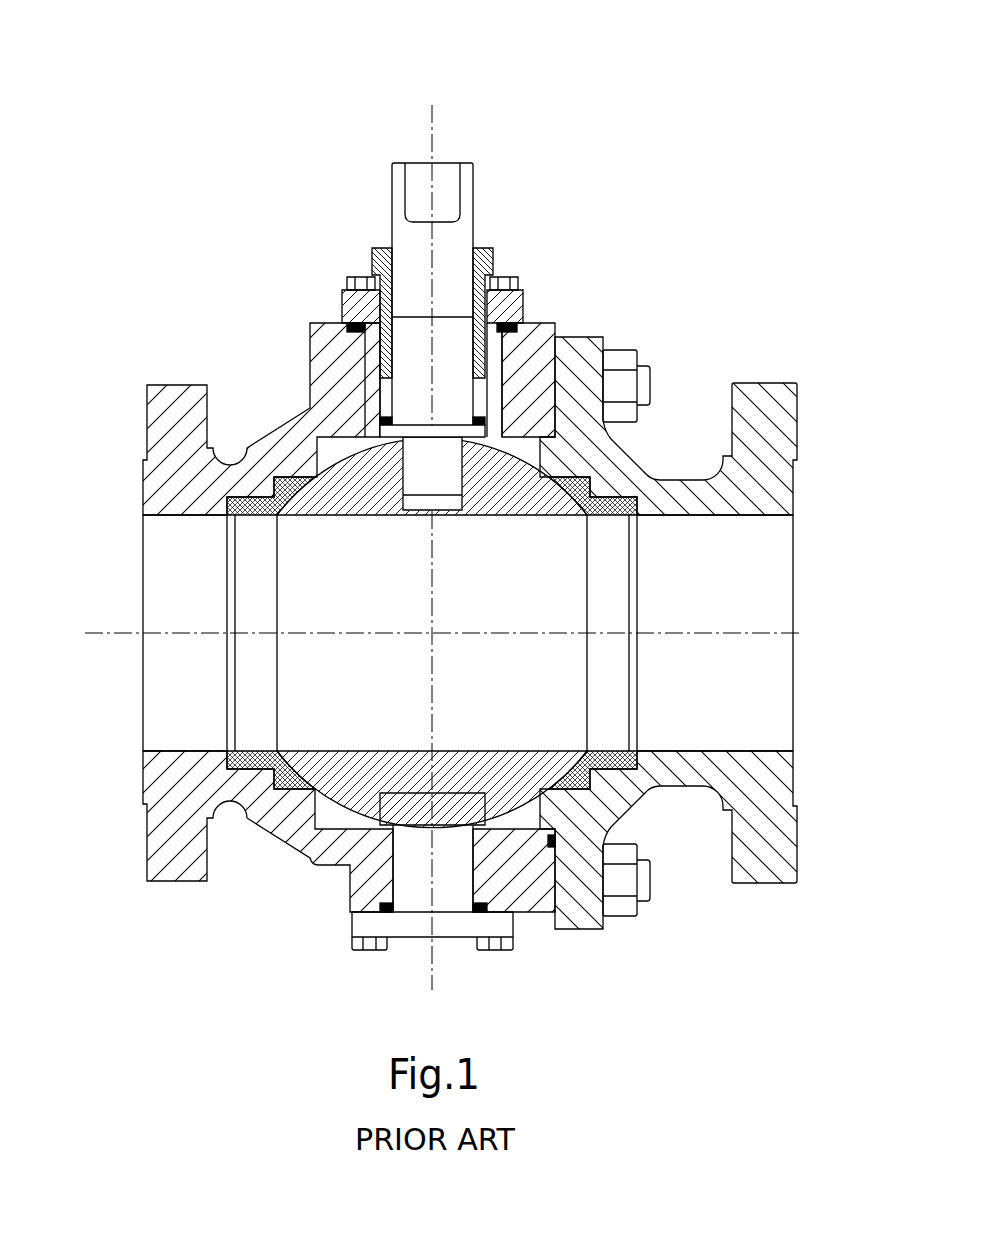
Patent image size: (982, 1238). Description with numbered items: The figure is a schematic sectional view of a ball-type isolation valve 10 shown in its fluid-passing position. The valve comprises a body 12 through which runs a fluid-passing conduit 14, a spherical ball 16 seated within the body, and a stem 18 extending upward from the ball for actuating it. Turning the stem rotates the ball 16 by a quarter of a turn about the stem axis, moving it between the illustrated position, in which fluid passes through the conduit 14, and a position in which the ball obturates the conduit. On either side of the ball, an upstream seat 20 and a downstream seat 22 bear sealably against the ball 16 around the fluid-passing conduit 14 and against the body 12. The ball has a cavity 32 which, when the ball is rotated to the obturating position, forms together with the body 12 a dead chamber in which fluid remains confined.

The isolation valve 10 is at (431, 497).
The body 12 is at (157, 430).
The fluid-passing conduit 14 is at (203, 706).
The ball 16 is at (363, 506).
The stem 18 is at (400, 212).
The upstream seat 20 is at (287, 478).
The downstream seat 22 is at (613, 506).
The cavity 32 is at (486, 617).